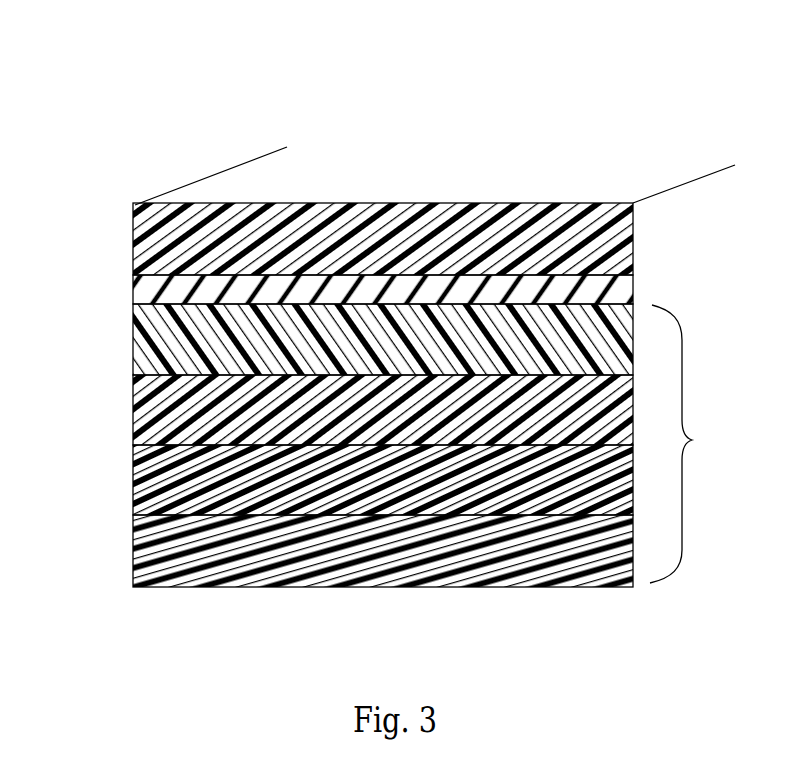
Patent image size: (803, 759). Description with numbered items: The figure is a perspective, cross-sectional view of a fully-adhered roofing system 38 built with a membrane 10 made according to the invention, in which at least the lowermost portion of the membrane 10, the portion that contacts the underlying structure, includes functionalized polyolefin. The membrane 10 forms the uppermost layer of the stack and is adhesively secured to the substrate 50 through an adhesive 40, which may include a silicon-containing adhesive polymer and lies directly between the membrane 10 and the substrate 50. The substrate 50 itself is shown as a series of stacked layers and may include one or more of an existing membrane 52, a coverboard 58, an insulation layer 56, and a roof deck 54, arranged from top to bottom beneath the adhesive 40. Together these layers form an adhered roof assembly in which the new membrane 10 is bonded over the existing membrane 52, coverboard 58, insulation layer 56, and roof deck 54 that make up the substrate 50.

The membrane 10 is at (633, 222).
The fully-adhered roofing system 38 is at (274, 98).
The adhesive 40 is at (638, 285).
The substrate 50 is at (693, 444).
The existing membrane 52 is at (133, 345).
The roof deck 54 is at (131, 553).
The insulation layer 56 is at (131, 485).
The coverboard 58 is at (131, 410).